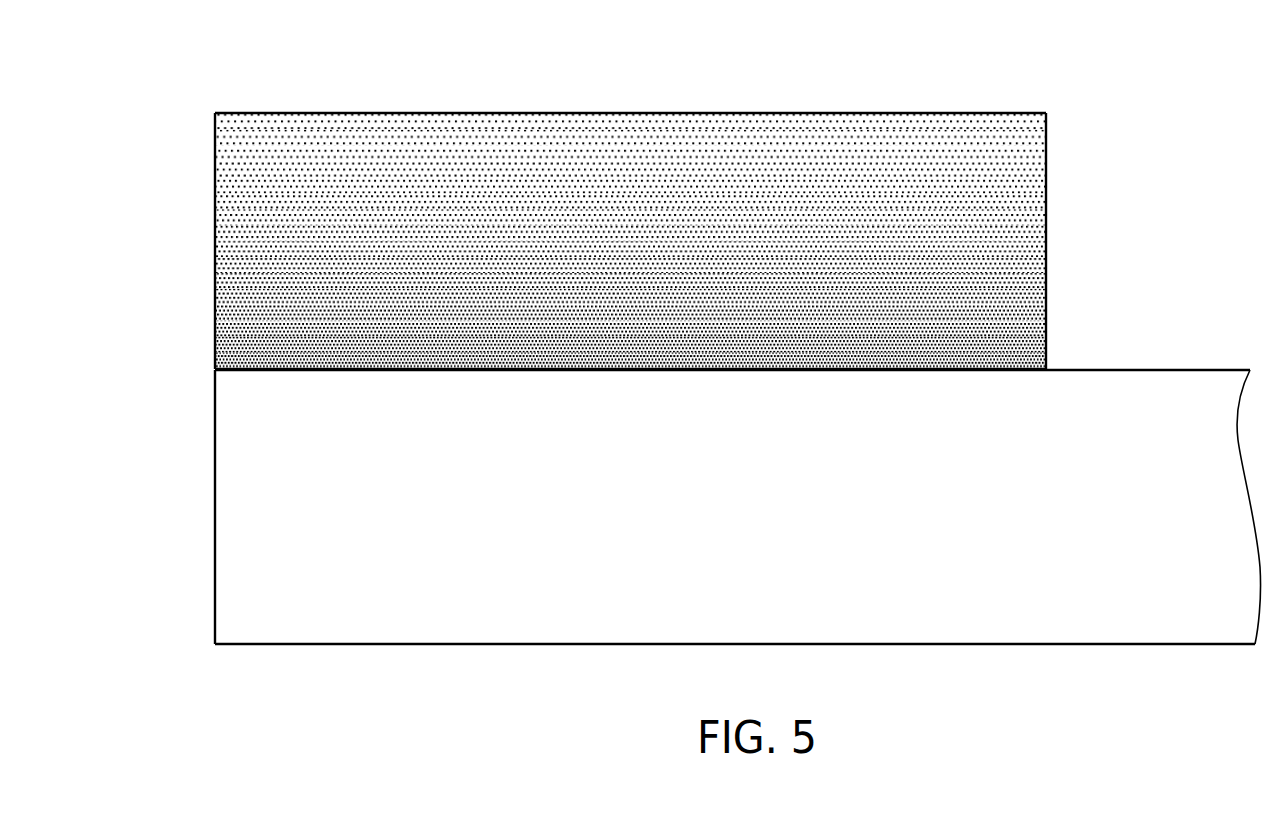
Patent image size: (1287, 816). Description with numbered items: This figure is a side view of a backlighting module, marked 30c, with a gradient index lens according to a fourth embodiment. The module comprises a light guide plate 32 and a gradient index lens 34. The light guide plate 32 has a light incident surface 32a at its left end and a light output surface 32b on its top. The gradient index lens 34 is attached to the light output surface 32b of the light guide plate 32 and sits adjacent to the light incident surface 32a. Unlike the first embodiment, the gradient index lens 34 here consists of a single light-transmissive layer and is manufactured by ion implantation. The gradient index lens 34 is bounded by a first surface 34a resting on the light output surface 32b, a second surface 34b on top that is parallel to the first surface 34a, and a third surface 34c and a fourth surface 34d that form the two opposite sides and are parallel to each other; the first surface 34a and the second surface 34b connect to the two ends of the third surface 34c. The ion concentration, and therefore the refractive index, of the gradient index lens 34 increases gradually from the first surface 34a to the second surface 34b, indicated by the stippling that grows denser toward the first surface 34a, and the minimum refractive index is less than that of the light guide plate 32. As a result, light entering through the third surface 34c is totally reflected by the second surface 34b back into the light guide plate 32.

The semiconductor structure 30c is at (240, 38).
The light guide plate 32 is at (1146, 618).
The light incident surface 32a is at (215, 520).
The light output surface 32b is at (1172, 369).
The gradient index lens 34 is at (920, 88).
The first surface 34a is at (587, 371).
The second surface 34b is at (614, 113).
The third surface 34c is at (215, 182).
The fourth surface 34d is at (1047, 237).